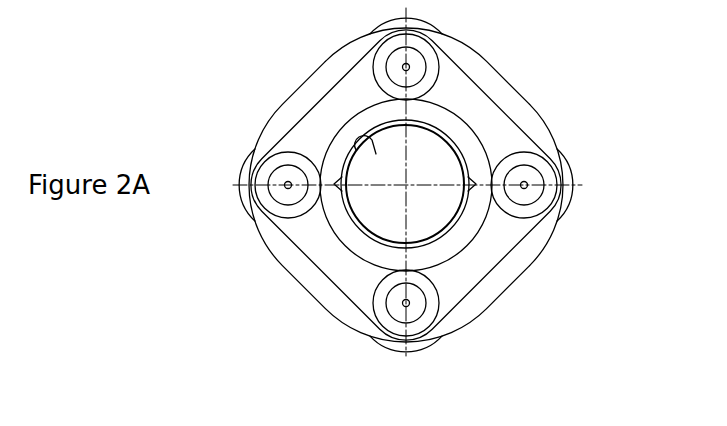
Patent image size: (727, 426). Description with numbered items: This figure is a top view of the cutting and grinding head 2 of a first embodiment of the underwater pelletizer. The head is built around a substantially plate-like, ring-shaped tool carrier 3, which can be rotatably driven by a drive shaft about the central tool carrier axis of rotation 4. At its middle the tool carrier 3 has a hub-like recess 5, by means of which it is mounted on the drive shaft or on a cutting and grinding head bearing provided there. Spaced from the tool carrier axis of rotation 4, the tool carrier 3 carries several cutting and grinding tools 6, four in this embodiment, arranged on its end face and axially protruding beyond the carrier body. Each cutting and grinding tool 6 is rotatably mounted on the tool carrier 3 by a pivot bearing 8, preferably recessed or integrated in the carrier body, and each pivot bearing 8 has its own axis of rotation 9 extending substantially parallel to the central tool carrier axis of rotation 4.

The cutting and grinding head 2 is at (551, 88).
The tool carrier 3 is at (510, 256).
The tool carrier axis of rotation 4 is at (409, 180).
The hub-like recess 5 is at (372, 152).
The cutting and grinding tool 6 is at (574, 160).
The pivot bearing 8 is at (378, 307).
The axis of rotation 9 is at (574, 204).